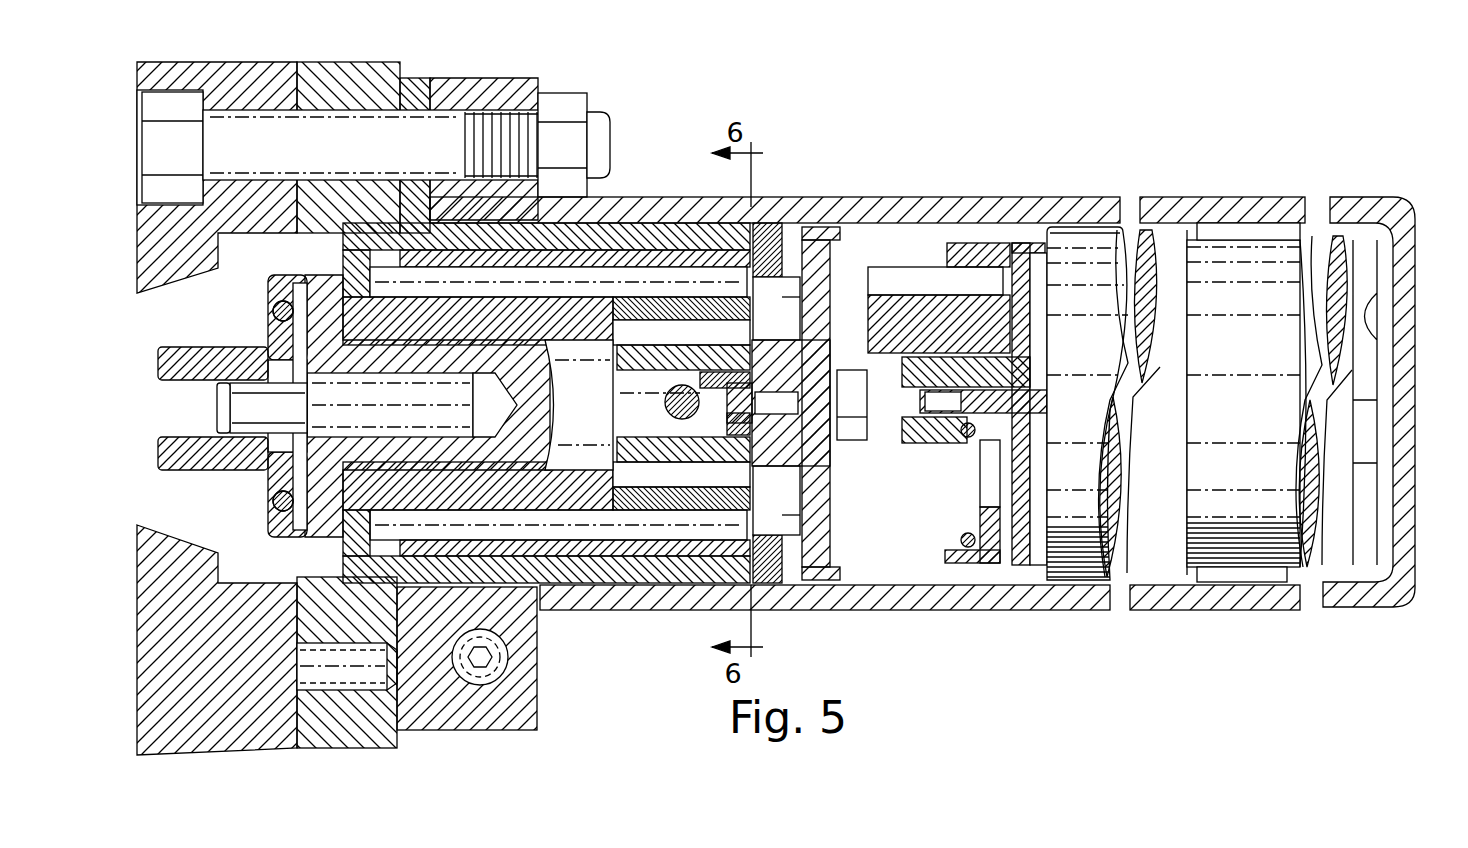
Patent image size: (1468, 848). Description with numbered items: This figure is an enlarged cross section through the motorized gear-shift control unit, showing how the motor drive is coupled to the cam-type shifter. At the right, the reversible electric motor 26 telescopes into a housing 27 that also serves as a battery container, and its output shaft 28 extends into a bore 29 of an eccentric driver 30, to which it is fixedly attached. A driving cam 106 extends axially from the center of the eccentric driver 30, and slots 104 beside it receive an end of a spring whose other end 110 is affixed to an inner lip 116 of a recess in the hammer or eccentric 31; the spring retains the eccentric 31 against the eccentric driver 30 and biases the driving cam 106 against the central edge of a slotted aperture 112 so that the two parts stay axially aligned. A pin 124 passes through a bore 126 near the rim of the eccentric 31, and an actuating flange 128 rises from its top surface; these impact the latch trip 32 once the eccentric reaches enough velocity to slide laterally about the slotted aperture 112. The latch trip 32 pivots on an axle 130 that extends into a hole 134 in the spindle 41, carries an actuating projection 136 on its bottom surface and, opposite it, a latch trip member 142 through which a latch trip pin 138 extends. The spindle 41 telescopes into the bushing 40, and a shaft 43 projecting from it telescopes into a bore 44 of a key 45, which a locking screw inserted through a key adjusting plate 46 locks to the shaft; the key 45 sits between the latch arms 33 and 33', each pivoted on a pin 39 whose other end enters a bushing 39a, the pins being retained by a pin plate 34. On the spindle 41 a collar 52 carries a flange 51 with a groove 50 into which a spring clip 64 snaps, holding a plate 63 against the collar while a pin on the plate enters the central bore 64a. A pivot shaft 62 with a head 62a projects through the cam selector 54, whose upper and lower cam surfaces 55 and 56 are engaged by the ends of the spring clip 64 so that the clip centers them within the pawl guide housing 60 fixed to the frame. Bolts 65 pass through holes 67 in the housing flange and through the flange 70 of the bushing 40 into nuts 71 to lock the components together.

The reversible electric motor 26 is at (1228, 383).
The housing 27 is at (1038, 197).
The output shaft 28 is at (1050, 393).
The bore 29 is at (902, 425).
The eccentric driver 30 is at (1015, 240).
The eccentric 31 is at (924, 336).
The latch trip 32 is at (835, 585).
The latch arm 33 is at (802, 505).
The latch arm 33' is at (792, 256).
The pin plate 34 is at (766, 250).
The pin 39 is at (548, 289).
The bushing 39a is at (748, 235).
The bushing 40 is at (471, 331).
The spindle 41 is at (566, 415).
The shaft 43 is at (622, 425).
The bore 44 is at (663, 372).
The key 45 is at (690, 303).
The key adjusting plate 46 is at (698, 415).
The groove 50 is at (273, 311).
The flange 51 is at (270, 282).
The collar 52 is at (345, 323).
The cam selector 54 is at (98, 410).
The upper cam surface 55 is at (160, 363).
The lower cam surface 56 is at (160, 456).
The pawl guide housing 60 is at (196, 679).
The pivot shaft 62 is at (234, 417).
The head 62a is at (380, 419).
The plate 63 is at (310, 356).
The spring clip 64 is at (290, 340).
The central bore 64a is at (380, 378).
The bolt 65 is at (453, 112).
The hole 67 is at (485, 105).
The flange 70 is at (352, 117).
The nut 71 is at (563, 97).
The slot 104 is at (965, 445).
The driving cam 106 is at (950, 440).
The spring end 110 is at (955, 622).
The slotted aperture 112 is at (987, 494).
The inner lip 116 is at (945, 548).
The pin 124 is at (893, 290).
The bore 126 is at (945, 265).
The actuating flange 128 is at (877, 314).
The axle 130 is at (778, 403).
The hole 134 is at (760, 368).
The actuating projection 136 is at (850, 405).
The latch trip pin 138 is at (847, 367).
The latch trip member 142 is at (820, 475).